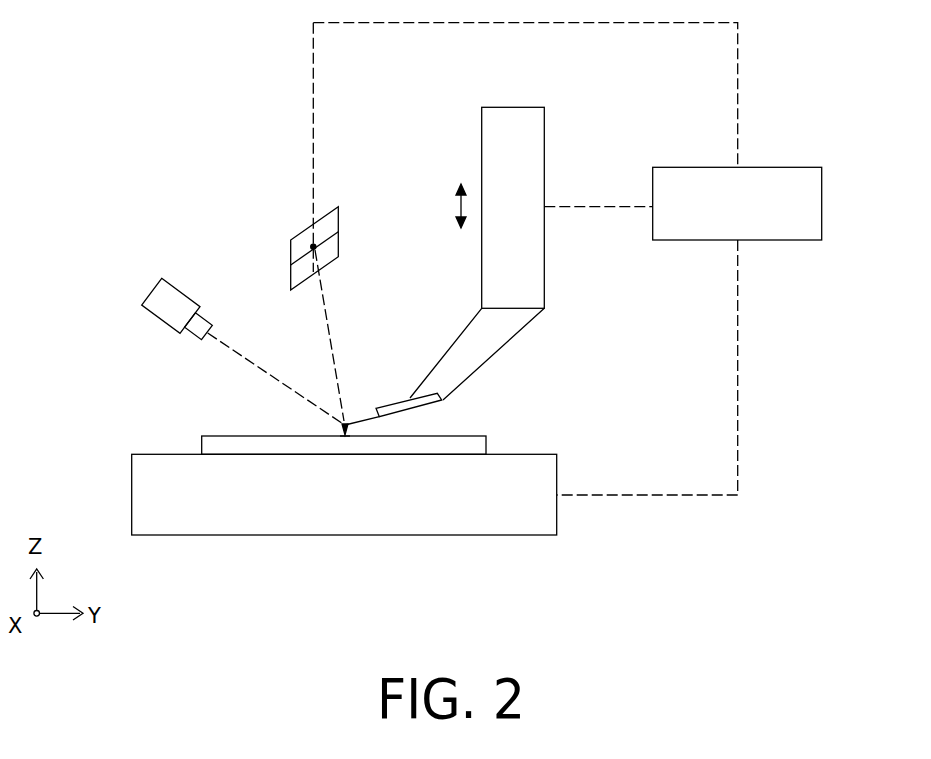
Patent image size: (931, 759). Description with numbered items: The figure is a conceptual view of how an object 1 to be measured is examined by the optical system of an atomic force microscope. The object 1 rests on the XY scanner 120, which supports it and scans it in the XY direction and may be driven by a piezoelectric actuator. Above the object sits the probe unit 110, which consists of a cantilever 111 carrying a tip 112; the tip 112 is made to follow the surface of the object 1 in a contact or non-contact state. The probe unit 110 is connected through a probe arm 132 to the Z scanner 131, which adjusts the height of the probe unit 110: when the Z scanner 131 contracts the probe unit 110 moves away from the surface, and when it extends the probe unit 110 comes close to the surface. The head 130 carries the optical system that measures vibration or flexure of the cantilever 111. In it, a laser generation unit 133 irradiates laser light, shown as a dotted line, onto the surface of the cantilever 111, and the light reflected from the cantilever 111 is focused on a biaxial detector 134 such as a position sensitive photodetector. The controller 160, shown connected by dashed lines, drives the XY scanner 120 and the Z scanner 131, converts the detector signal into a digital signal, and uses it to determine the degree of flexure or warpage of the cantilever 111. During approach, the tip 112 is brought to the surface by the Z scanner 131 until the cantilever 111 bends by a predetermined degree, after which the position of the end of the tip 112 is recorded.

The object to be measured 1 is at (213, 445).
The probe unit 110 is at (368, 398).
The cantilever 111 is at (343, 430).
The tip 112 is at (343, 422).
The XY scanner 120 is at (157, 525).
The head 130 is at (197, 173).
The Z scanner 131 is at (532, 132).
The probe arm 132 is at (482, 343).
The laser generation unit 133 is at (163, 310).
The detector 134 is at (297, 231).
The controller 160 is at (807, 185).